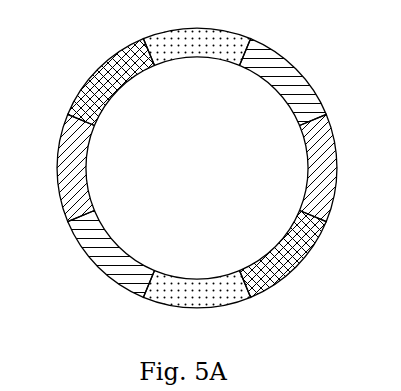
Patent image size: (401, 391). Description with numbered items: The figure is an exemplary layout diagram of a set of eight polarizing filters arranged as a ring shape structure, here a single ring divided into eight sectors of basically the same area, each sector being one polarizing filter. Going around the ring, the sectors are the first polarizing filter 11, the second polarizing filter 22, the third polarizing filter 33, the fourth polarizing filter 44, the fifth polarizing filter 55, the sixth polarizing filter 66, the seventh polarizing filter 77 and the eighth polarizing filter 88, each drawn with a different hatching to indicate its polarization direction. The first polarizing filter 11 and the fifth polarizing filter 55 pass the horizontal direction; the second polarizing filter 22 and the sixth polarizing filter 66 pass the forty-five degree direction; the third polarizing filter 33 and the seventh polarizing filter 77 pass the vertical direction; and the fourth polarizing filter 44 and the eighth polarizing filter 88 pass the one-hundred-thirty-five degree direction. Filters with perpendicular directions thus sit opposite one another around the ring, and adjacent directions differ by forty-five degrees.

The first polarizing filter 11 is at (334, 167).
The second polarizing filter 22 is at (283, 82).
The third polarizing filter 33 is at (196, 34).
The fourth polarizing filter 44 is at (111, 82).
The fifth polarizing filter 55 is at (62, 167).
The sixth polarizing filter 66 is at (111, 255).
The seventh polarizing filter 77 is at (196, 305).
The eighth polarizing filter 88 is at (283, 254).